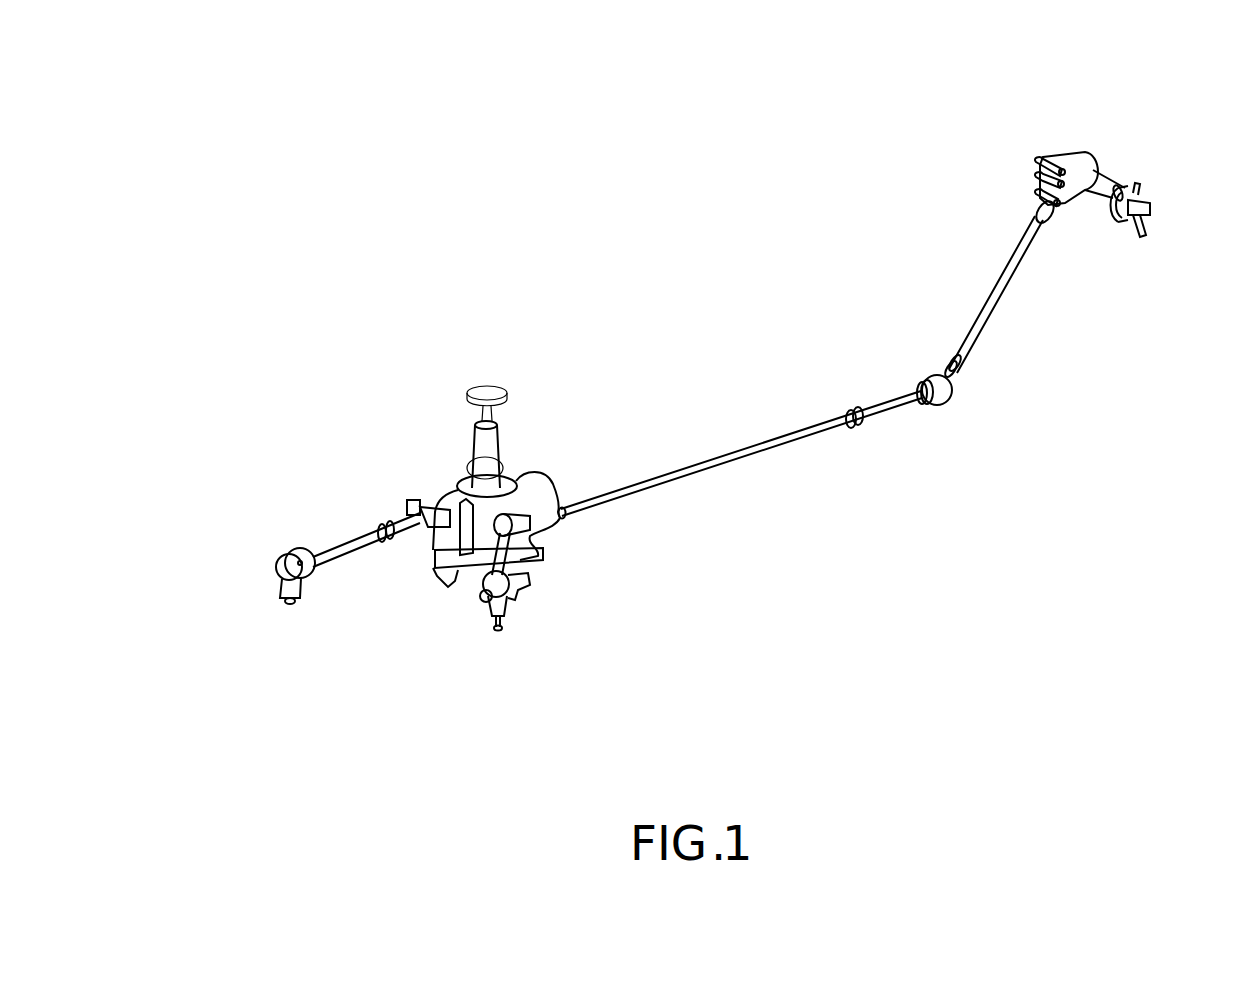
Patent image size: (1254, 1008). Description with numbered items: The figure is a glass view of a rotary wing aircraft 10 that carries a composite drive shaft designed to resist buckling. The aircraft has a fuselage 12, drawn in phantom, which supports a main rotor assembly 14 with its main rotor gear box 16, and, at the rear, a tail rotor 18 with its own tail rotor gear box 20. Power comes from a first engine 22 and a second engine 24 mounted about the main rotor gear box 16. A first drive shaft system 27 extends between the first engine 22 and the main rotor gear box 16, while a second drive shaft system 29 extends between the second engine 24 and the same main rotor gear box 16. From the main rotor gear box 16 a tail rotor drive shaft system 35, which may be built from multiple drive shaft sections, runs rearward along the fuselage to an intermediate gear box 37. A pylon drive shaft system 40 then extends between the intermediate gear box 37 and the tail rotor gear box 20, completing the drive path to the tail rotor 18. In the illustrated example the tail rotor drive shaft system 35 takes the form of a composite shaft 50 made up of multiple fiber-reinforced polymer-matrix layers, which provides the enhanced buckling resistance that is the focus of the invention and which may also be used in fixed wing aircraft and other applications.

The rotary wing aircraft 10 is at (245, 176).
The fuselage 12 is at (379, 630).
The main rotor assembly 14 is at (488, 422).
The main rotor gear box 16 is at (510, 490).
The tail rotor 18 is at (1140, 193).
The tail rotor gear box 20 is at (1085, 153).
The first engine 22 is at (282, 570).
The second engine 24 is at (513, 607).
The first drive shaft system 27 is at (363, 540).
The second drive shaft system 29 is at (500, 565).
The tail rotor drive shaft system 35 is at (594, 515).
The intermediate gear box 37 is at (956, 394).
The pylon drive shaft system 40 is at (1002, 297).
The composite shaft 50 is at (770, 452).